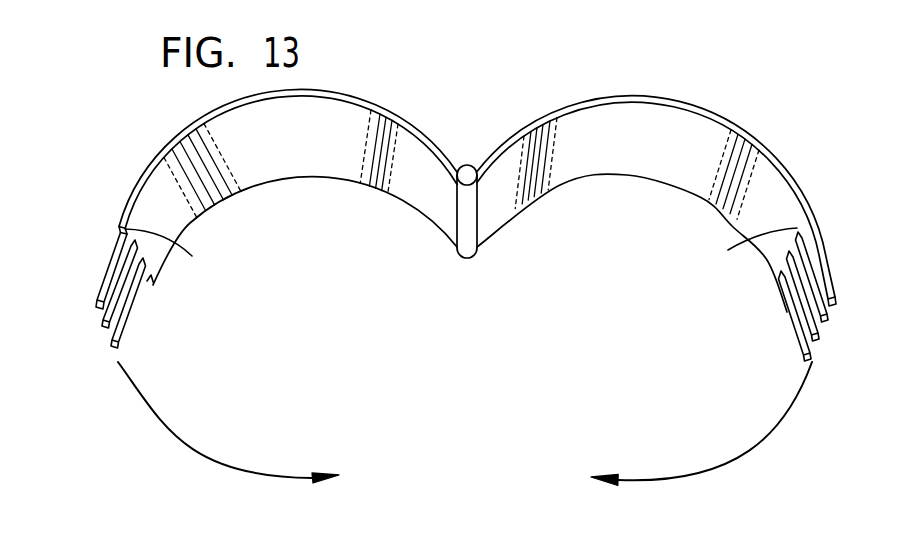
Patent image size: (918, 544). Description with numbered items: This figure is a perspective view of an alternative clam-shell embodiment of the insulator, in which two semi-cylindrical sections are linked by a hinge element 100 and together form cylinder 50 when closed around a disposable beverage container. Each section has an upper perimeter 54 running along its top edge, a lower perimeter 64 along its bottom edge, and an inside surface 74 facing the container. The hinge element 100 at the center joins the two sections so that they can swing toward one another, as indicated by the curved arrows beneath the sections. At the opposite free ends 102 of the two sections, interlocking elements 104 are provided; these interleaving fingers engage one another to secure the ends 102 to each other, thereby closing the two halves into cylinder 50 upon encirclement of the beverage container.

The cylinder 50 is at (189, 111).
The upper perimeter 54 is at (384, 108).
The perimeter 64 is at (228, 200).
The inside surface 74 is at (338, 160).
The hinge element 100 is at (458, 220).
The ends 102 is at (172, 247).
The interlocking elements 104 is at (108, 226).